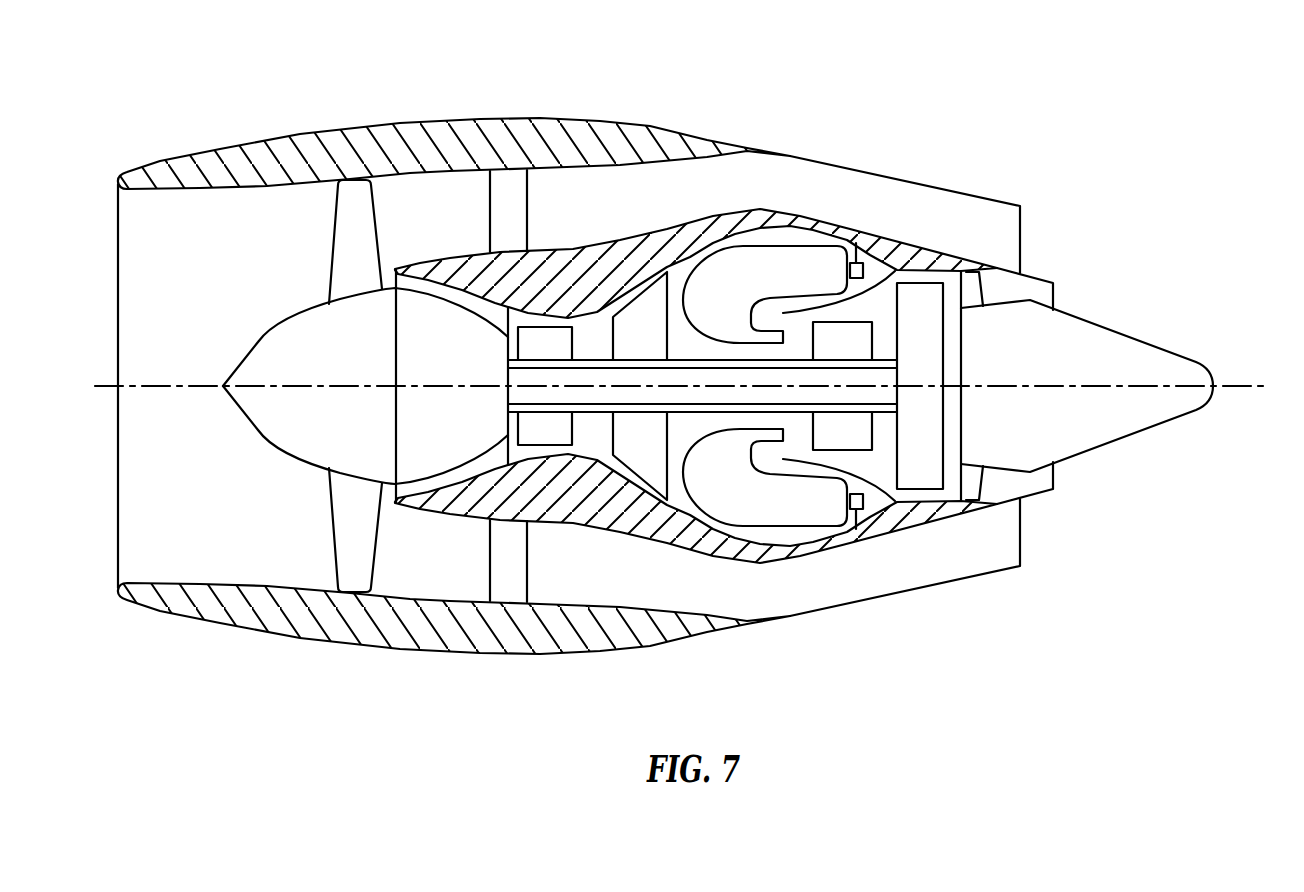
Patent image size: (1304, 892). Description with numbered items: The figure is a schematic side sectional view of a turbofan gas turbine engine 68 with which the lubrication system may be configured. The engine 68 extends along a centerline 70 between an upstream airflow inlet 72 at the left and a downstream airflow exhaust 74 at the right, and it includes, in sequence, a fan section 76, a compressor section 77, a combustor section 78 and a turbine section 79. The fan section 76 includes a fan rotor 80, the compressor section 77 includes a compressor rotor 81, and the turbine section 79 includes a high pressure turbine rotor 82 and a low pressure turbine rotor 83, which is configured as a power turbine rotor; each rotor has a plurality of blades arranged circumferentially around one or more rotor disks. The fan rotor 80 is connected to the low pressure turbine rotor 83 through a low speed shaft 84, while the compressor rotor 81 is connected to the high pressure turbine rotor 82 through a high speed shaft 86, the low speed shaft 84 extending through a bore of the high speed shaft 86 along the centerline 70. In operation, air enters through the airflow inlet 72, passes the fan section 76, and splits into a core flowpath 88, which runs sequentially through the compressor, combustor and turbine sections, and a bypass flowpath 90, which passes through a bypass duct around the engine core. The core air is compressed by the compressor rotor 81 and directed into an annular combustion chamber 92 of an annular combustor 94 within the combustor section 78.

The turbofan gas turbine engine 68 is at (998, 151).
The centerline 70 is at (1258, 386).
The upstream airflow inlet 72 is at (117, 270).
The downstream airflow exhaust 74 is at (1053, 293).
The fan section 76 is at (300, 217).
The compressor section 77 is at (592, 330).
The combustor section 78 is at (763, 235).
The turbine section 79 is at (891, 306).
The fan rotor 80 is at (276, 452).
The compressor rotor 81 is at (583, 514).
The high pressure turbine (HPT) rotor 82 is at (872, 427).
The low pressure turbine (LPT) rotor 83 is at (943, 400).
The low speed shaft 84 is at (510, 392).
The high speed shaft 86 is at (682, 358).
The core flowpath 88 is at (1007, 285).
The bypass flowpath 90 is at (994, 234).
The annular combustion chamber 92 is at (797, 524).
The annular combustor 94 is at (752, 535).